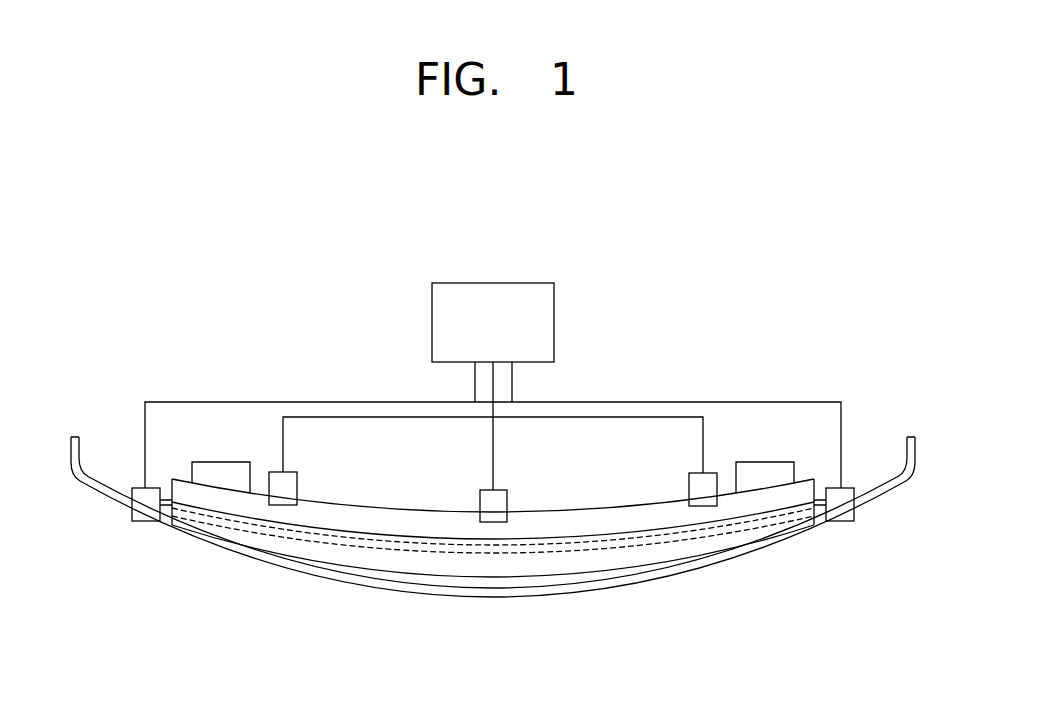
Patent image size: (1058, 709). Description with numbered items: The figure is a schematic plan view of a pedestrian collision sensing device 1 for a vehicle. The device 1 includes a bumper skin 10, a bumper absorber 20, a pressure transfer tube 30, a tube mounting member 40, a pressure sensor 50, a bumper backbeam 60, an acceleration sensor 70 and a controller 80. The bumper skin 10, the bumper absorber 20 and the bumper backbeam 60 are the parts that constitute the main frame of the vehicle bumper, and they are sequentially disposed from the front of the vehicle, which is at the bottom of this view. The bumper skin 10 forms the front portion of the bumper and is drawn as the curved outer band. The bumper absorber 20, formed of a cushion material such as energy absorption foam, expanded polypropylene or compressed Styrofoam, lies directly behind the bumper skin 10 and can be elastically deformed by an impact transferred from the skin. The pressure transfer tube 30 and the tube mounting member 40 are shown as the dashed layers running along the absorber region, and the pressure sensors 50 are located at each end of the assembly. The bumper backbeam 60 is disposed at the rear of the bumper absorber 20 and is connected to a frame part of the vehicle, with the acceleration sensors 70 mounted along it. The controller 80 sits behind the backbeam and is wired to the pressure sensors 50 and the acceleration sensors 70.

The pedestrian collision sensing device 1 is at (806, 227).
The bumper skin 10 is at (880, 498).
The bumper absorber 20 is at (423, 565).
The pressure transfer tube 30 is at (503, 553).
The tube mounting member 40 is at (493, 534).
The pressure sensor 50 is at (135, 490).
The bumper backbeam 60 is at (760, 503).
The acceleration sensor 70 is at (290, 486).
The controller 80 is at (545, 323).